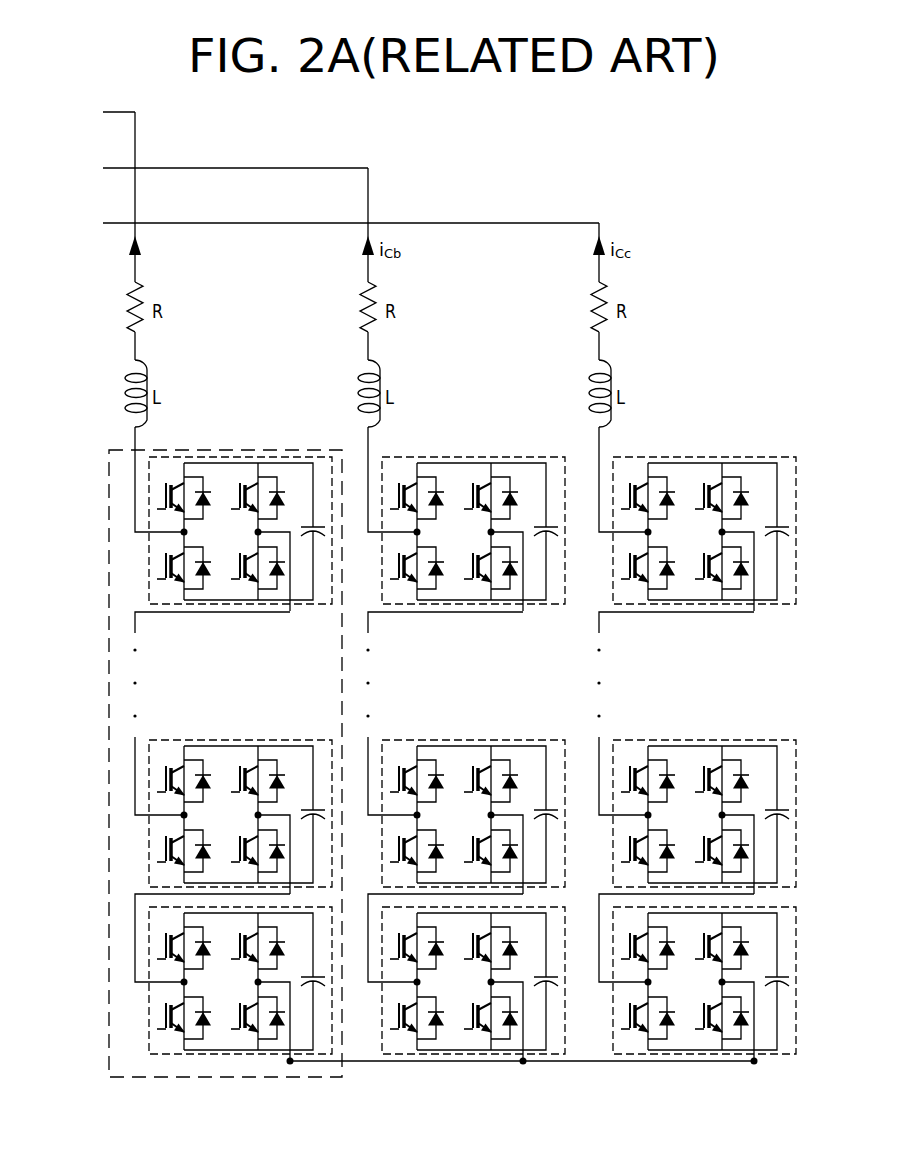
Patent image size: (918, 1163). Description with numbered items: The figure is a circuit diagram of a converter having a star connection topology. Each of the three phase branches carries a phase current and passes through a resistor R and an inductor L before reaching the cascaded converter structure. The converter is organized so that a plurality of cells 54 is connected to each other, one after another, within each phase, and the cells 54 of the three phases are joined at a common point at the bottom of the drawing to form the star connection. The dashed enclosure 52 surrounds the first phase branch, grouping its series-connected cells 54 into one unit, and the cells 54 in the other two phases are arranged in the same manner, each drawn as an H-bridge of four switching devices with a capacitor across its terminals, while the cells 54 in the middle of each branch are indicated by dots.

The phase arm of cascaded H-bridge converter 52 is at (108, 617).
The cell 54 is at (265, 453).
The resistor R is at (145, 307).
The inductor L is at (143, 393).